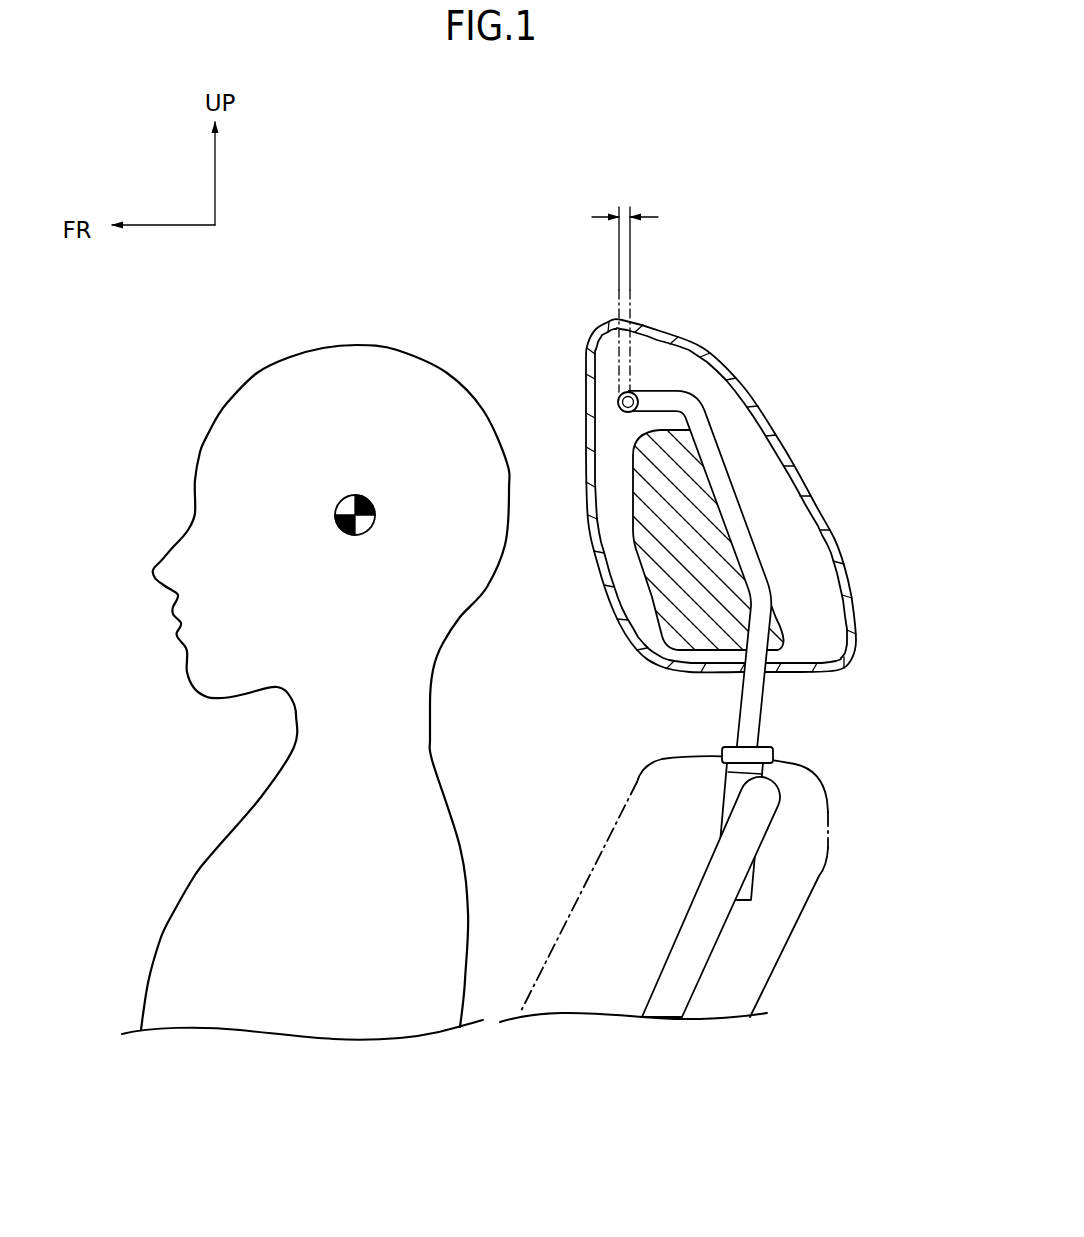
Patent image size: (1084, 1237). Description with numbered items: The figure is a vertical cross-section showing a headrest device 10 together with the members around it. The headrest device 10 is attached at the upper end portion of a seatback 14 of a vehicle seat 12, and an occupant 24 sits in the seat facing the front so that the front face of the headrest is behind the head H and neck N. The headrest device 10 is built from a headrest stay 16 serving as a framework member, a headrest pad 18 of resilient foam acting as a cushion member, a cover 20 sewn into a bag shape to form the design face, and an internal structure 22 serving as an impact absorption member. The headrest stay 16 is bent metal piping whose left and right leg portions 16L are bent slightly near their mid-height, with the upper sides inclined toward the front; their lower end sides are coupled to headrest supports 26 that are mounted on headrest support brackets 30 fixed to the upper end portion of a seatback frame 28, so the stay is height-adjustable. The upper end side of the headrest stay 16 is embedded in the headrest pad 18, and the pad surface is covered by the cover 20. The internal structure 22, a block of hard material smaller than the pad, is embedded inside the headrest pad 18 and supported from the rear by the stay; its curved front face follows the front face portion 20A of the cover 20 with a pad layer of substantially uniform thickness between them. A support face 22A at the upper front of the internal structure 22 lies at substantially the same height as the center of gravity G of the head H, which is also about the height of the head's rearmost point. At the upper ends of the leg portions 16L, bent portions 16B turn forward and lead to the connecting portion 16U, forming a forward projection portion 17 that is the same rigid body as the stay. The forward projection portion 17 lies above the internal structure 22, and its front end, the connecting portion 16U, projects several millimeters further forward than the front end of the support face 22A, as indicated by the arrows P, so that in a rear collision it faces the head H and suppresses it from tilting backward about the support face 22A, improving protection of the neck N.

The headrest device 10 is at (720, 434).
The vehicle seat 12 is at (730, 859).
The seatback 14 is at (818, 893).
The headrest stay 16 is at (725, 452).
The connecting portion 16U is at (626, 397).
The bent portion 16B is at (705, 362).
The leg portion 16L is at (767, 712).
The forward projection portion 17 is at (660, 332).
The headrest pad 18 is at (768, 500).
The cover 20 is at (830, 565).
The front face portion 20A is at (601, 586).
The internal structure 22 is at (663, 618).
The support face 22A is at (632, 500).
The occupant 24 is at (181, 895).
The headrest support 26 is at (733, 745).
The seatback frame 28 is at (668, 960).
The headrest support bracket 30 is at (722, 806).
The head H is at (227, 403).
The center of gravity G is at (350, 495).
The neck N is at (292, 737).
The arrows P is at (620, 207).